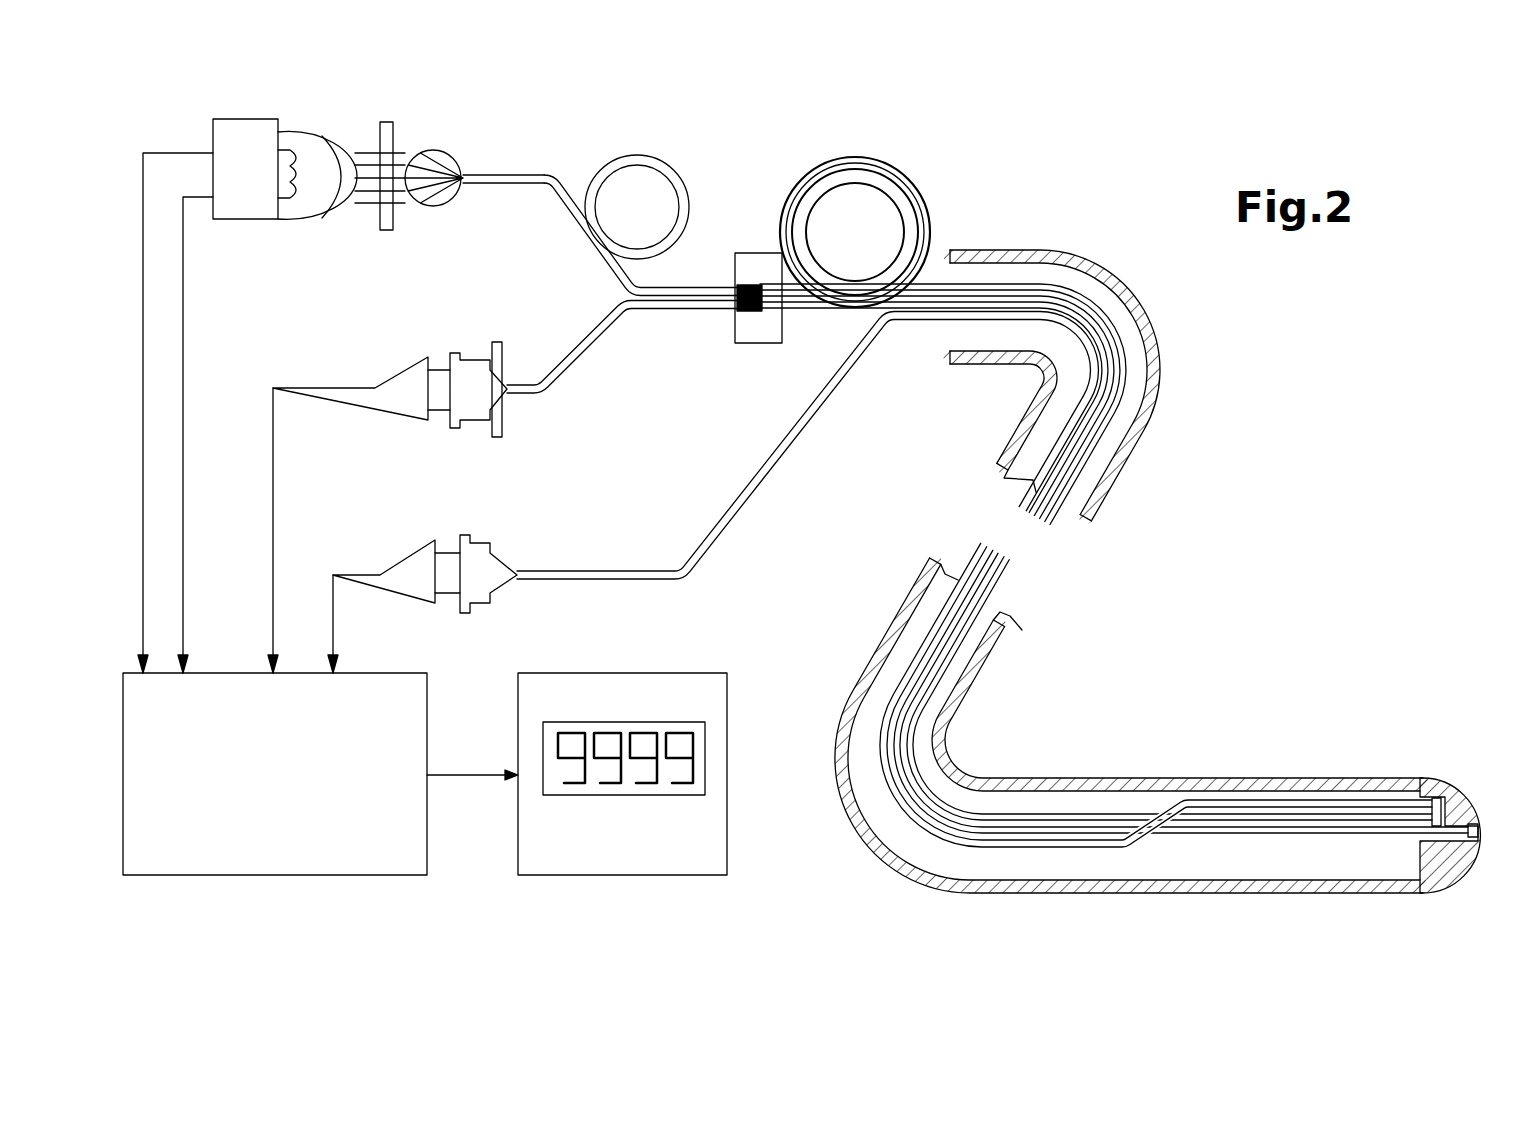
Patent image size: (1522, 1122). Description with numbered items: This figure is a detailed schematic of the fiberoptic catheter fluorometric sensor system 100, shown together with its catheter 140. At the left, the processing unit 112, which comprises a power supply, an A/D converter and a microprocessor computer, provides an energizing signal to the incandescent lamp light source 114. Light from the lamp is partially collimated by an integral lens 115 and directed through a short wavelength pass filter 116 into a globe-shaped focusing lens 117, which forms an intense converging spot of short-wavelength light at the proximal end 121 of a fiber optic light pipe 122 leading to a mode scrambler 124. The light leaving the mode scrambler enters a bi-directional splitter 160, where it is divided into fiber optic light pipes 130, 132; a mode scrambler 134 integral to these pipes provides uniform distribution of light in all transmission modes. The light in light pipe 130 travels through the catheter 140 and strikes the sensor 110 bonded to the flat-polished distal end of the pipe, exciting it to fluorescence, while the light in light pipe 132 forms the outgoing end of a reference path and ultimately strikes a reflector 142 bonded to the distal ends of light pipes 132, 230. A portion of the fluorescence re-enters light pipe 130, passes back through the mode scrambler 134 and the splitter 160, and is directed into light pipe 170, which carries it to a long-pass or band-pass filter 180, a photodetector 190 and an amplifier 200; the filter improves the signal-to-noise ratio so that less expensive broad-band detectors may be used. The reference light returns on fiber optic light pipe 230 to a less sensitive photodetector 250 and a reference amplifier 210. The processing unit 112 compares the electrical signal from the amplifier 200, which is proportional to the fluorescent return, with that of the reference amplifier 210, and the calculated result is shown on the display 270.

The fiberoptic catheter fluorometric sensor system 100 is at (1186, 578).
The sensor 110 is at (1487, 830).
The processing unit 112 is at (335, 848).
The incandescent lamp light source 114 is at (243, 195).
The integral lens 115 is at (335, 162).
The short wavelength pass filter 116 is at (385, 222).
The globe-shaped focusing lens 117 is at (455, 155).
The proximal end 121 is at (467, 186).
The fiber optic light pipe 122 is at (566, 178).
The mode scrambler 124 is at (686, 163).
The fiber optic light pipe 130 is at (824, 306).
The fiber optic light pipe 132 is at (1073, 815).
The mode scrambler 134 is at (926, 193).
The catheter 140 is at (1150, 440).
The reflector 142 is at (1436, 798).
The bi-directional splitter 160 is at (760, 333).
The light pipe 170 is at (600, 347).
The long-pass or band-pass filter 180 is at (505, 425).
The photodetector 190 is at (468, 405).
The amplifier 200 is at (408, 388).
The reference amplifier 210 is at (420, 570).
The fiber optic light pipe 230 is at (676, 582).
The photodetector 250 is at (480, 596).
The display 270 is at (688, 838).